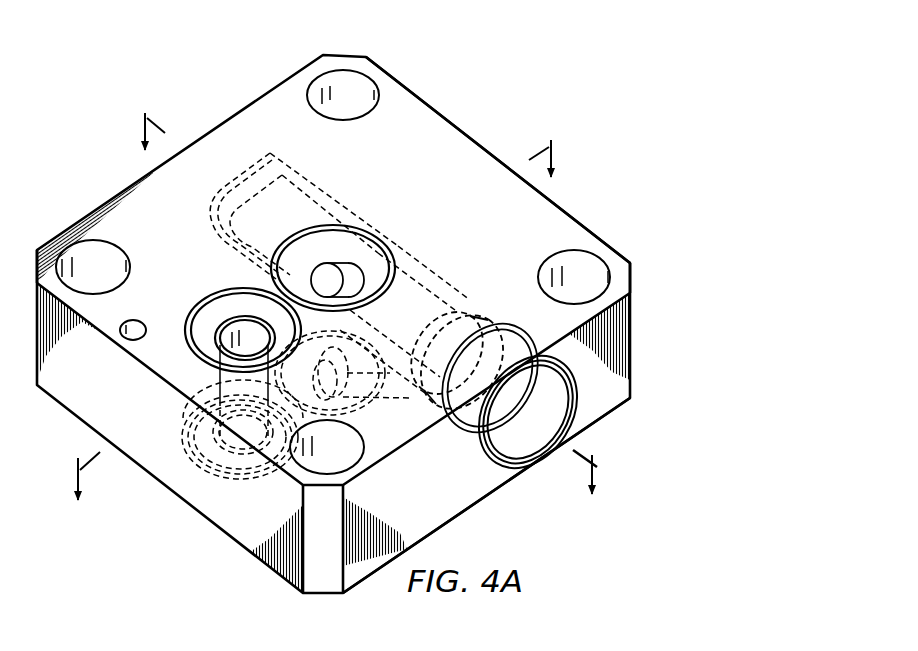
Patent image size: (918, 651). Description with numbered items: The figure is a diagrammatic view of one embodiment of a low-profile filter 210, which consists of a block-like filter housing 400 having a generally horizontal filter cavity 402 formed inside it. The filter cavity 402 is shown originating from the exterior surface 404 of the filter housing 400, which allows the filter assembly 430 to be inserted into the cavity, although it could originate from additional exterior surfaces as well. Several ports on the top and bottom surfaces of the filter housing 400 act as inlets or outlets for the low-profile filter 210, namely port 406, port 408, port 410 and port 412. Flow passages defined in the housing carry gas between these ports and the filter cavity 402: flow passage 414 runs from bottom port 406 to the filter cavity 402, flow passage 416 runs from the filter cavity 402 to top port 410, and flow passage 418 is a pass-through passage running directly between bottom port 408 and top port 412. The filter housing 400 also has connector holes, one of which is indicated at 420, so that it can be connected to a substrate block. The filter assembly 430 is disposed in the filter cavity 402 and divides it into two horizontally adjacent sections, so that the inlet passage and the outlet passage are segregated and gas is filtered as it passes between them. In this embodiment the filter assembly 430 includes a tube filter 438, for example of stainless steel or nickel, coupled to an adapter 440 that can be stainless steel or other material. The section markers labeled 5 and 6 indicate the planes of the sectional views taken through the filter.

The low-profile filter 210 is at (236, 88).
The filter housing 400 is at (470, 153).
The filter cavity 402 is at (521, 447).
The surface 404 is at (598, 380).
The port 406 is at (368, 416).
The port 408 is at (241, 483).
The port 410 is at (300, 246).
The port 412 is at (218, 294).
The flow passage 414 is at (404, 406).
The flow passage 416 is at (376, 298).
The flow passage 418 is at (183, 404).
The connector hole 420 is at (368, 111).
The filter assembly 430 is at (420, 270).
The tube filter 438 is at (301, 216).
The adapter 440 is at (490, 322).
The section line 5- 5 is at (369, 297).
The section line 6- 6 is at (312, 312).